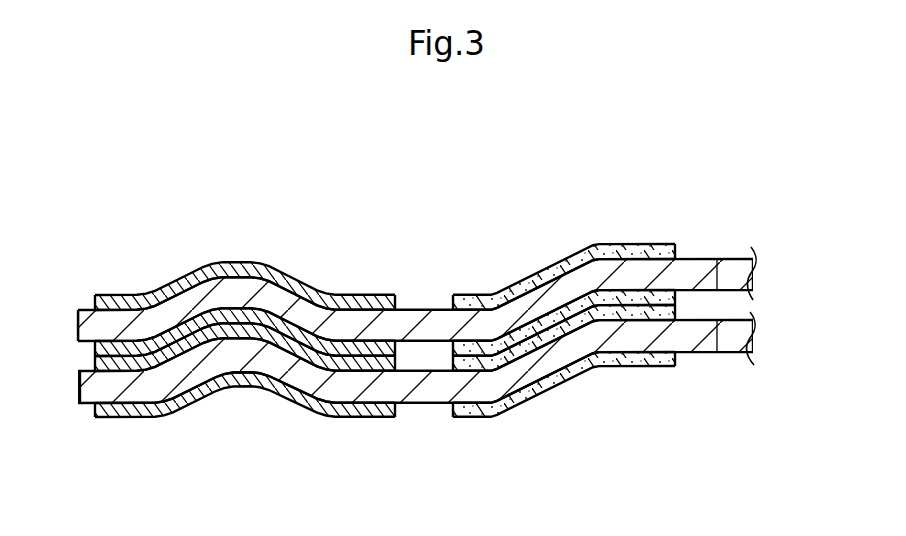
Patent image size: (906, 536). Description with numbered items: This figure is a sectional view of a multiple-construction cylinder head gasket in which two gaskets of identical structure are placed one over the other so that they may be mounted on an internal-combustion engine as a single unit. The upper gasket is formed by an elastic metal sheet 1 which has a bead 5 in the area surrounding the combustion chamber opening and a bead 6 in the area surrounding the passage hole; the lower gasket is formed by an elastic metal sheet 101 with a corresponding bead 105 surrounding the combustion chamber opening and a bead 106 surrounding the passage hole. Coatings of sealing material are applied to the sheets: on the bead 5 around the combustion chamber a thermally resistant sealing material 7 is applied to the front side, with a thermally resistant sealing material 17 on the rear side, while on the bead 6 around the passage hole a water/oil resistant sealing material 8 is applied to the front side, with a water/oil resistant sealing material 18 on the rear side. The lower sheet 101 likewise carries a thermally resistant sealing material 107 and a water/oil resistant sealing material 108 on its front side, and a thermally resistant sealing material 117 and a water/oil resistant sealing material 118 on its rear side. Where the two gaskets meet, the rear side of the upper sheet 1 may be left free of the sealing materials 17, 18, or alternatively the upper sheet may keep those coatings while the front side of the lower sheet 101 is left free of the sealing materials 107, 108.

The elastic metal sheet 1 is at (418, 255).
The bead 5 is at (253, 287).
The bead 6 is at (553, 290).
The thermally resistant sealing material 7 is at (250, 277).
The water/oil resistant sealing material 8 is at (598, 242).
The thermally resistant sealing material 17 is at (100, 350).
The water/oil resistant sealing material 18 is at (675, 294).
The elastic metal sheet 101 is at (429, 416).
The bead 105 is at (238, 357).
The bead 106 is at (570, 348).
The thermally resistant sealing material 107 is at (97, 372).
The water/oil resistant sealing material 108 is at (675, 313).
The thermally resistant sealing material 117 is at (153, 417).
The water/oil resistant sealing material 118 is at (497, 417).